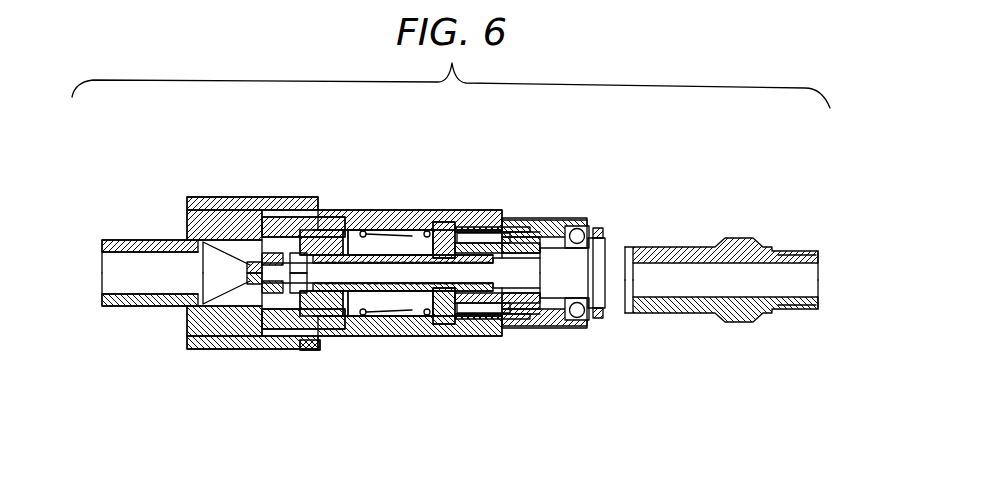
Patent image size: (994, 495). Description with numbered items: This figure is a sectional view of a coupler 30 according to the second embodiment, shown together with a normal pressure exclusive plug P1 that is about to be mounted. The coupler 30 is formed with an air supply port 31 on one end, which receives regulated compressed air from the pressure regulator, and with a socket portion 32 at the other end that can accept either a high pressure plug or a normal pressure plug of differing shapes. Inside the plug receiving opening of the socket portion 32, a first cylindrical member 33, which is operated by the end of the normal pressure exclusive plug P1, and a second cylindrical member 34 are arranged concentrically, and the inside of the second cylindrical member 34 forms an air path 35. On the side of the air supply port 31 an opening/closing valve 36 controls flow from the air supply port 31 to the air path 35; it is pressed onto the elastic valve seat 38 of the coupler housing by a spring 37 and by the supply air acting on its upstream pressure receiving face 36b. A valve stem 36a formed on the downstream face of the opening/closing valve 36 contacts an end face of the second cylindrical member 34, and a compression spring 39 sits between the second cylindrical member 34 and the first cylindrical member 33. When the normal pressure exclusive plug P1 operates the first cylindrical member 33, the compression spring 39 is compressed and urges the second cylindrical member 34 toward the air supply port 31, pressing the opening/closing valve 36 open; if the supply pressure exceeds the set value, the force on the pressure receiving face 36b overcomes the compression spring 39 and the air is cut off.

The coupler 30 is at (158, 170).
The air supply port 31 is at (147, 277).
The socket portion 32 is at (608, 262).
The first cylindrical member 33 is at (478, 216).
The second cylindrical member 34 is at (388, 292).
The air path 35 is at (438, 276).
The opening/closing valve 36 is at (248, 197).
The valve stem 36a is at (327, 198).
The pressure receiving face 36b is at (215, 346).
The spring 37 is at (205, 259).
The valve seat 38 is at (292, 332).
The compression spring 39 is at (380, 230).
The normal pressure exclusive plug P1 is at (667, 314).